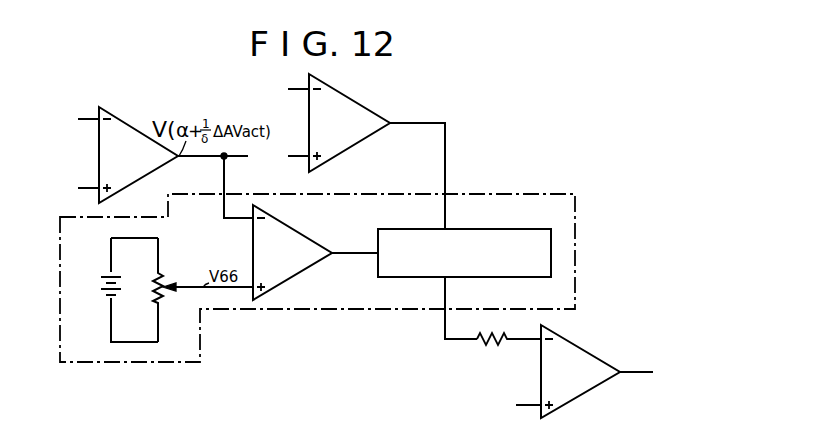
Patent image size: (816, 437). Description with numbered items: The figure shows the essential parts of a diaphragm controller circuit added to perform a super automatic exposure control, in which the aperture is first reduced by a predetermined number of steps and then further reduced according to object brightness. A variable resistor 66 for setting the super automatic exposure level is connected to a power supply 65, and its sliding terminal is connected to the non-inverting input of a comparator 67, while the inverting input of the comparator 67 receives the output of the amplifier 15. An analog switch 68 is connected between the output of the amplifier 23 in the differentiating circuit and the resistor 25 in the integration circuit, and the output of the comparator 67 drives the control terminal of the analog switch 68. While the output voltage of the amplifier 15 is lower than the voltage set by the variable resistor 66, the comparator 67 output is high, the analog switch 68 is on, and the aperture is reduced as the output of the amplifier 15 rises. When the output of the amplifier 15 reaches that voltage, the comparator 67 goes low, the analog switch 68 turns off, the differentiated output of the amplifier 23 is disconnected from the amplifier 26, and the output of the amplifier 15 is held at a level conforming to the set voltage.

The amplifier 15 is at (128, 132).
The amplifier 23 is at (355, 113).
The resistor 25 is at (489, 343).
The amplifier 26 is at (590, 362).
The power supply 65 is at (103, 280).
The variable resistor 66 is at (160, 277).
The comparator 67 is at (303, 243).
The analog switch 68 is at (382, 263).